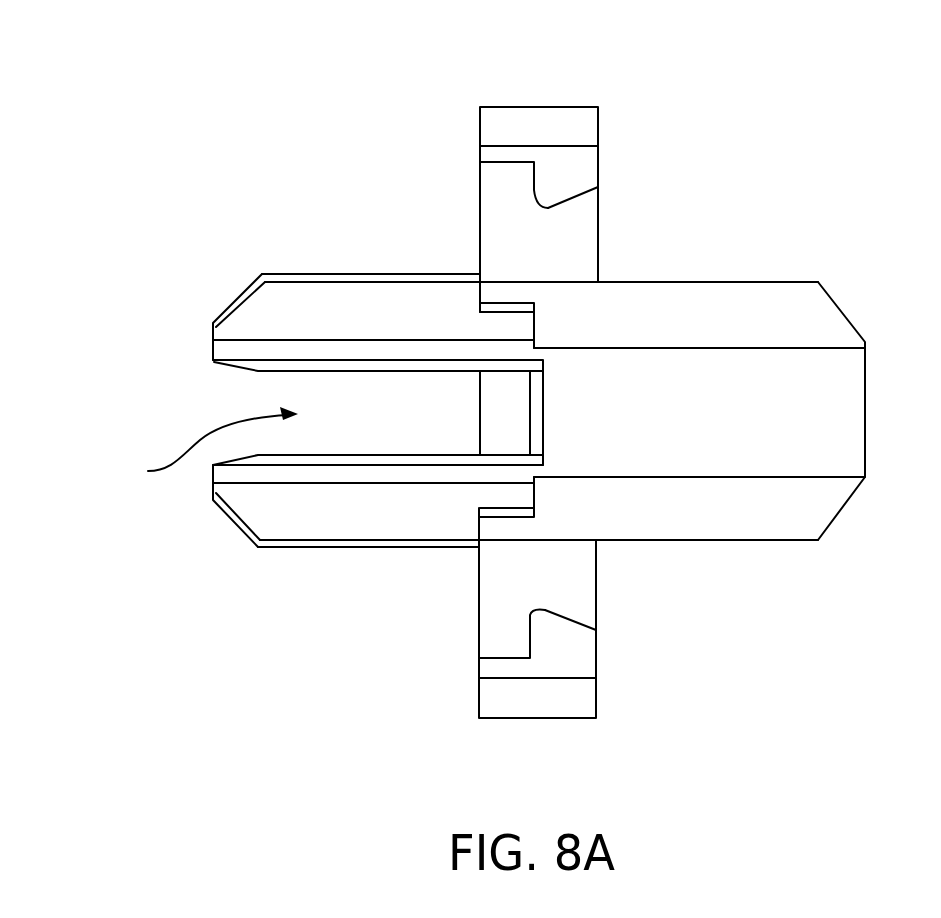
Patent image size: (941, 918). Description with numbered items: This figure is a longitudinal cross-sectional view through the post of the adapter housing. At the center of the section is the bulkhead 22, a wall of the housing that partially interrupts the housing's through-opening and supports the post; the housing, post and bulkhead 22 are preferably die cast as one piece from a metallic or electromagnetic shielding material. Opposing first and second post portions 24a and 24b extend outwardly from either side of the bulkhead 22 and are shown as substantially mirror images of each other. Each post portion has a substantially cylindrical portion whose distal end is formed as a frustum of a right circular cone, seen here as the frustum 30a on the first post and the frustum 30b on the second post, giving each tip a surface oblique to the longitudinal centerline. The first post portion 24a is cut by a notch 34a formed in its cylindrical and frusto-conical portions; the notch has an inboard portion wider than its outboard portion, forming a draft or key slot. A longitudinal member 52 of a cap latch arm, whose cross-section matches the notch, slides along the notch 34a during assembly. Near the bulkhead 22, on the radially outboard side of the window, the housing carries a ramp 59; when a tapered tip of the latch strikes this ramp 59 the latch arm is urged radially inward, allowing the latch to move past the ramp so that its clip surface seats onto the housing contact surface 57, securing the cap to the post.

The bulkhead 22 is at (518, 122).
The longitudinal member 52 is at (530, 193).
The ramp 59 is at (575, 203).
The contact surface 57 is at (479, 650).
The first post portion 24a is at (356, 273).
The second post portion 24b is at (719, 282).
The frustum 30a is at (232, 302).
The frustum 30b is at (842, 308).
The notch 34a is at (199, 446).